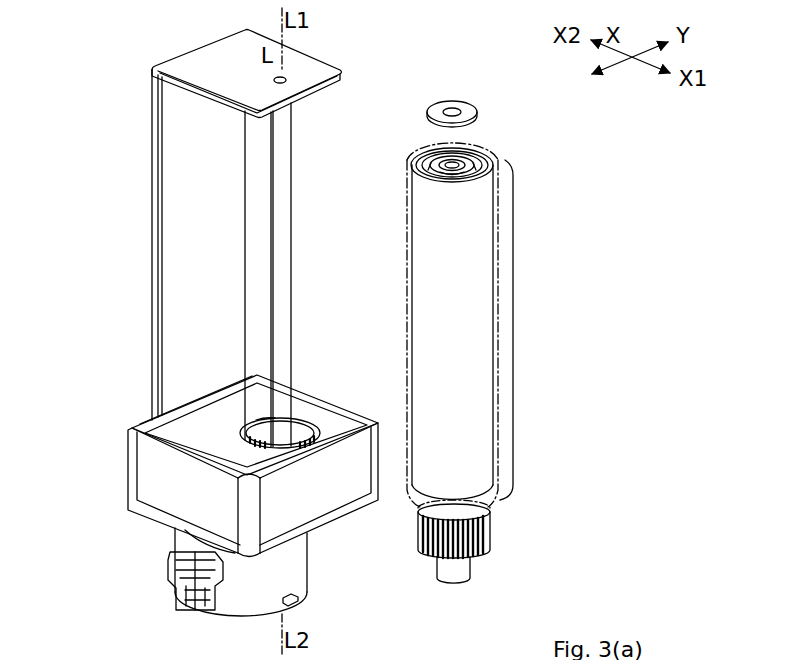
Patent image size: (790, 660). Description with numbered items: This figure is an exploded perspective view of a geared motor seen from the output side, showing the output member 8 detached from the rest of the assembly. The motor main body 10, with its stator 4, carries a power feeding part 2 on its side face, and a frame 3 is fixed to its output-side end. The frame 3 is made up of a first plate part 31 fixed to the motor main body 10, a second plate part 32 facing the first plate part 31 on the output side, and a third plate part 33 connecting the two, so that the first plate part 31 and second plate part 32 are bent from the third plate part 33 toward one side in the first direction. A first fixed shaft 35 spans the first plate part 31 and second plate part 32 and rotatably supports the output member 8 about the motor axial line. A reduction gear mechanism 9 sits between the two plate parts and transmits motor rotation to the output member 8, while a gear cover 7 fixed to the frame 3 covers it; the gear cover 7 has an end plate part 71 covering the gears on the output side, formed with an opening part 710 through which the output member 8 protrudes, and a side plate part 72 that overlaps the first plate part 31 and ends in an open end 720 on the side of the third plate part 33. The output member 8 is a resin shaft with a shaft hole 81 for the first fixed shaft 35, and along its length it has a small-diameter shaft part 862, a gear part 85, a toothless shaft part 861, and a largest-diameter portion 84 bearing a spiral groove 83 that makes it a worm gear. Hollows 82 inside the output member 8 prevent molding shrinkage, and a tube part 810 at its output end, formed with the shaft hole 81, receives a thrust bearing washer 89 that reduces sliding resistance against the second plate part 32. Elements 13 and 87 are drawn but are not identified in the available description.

The power feeding part 2 is at (170, 601).
The frame 3 is at (222, 225).
The stator 4 is at (225, 590).
The gear cover 7 is at (221, 435).
The output member 8 is at (445, 330).
The reduction gear mechanism 9 is at (305, 421).
The motor main body 10 is at (259, 590).
The projection 13 is at (255, 598).
The first plate part 31 is at (150, 513).
The second plate part 32 is at (215, 53).
The third plate part 33 is at (182, 215).
The first fixed shaft 35 is at (282, 182).
The end plate part 71 is at (195, 418).
The side plate part 72 is at (313, 505).
The shaft hole 81 is at (458, 164).
The hollows 82 is at (438, 162).
The spiral groove 83 is at (407, 300).
The portion provided with spiral groove 84 is at (513, 240).
The gear part 85 is at (490, 535).
The end flange 87 is at (488, 160).
The thrust bearing washer 89 is at (465, 107).
The opening part 710 is at (297, 420).
The open end 720 is at (225, 392).
The tube part 810 is at (430, 166).
The shaft part 861 is at (492, 511).
The shaft part 862 is at (470, 570).